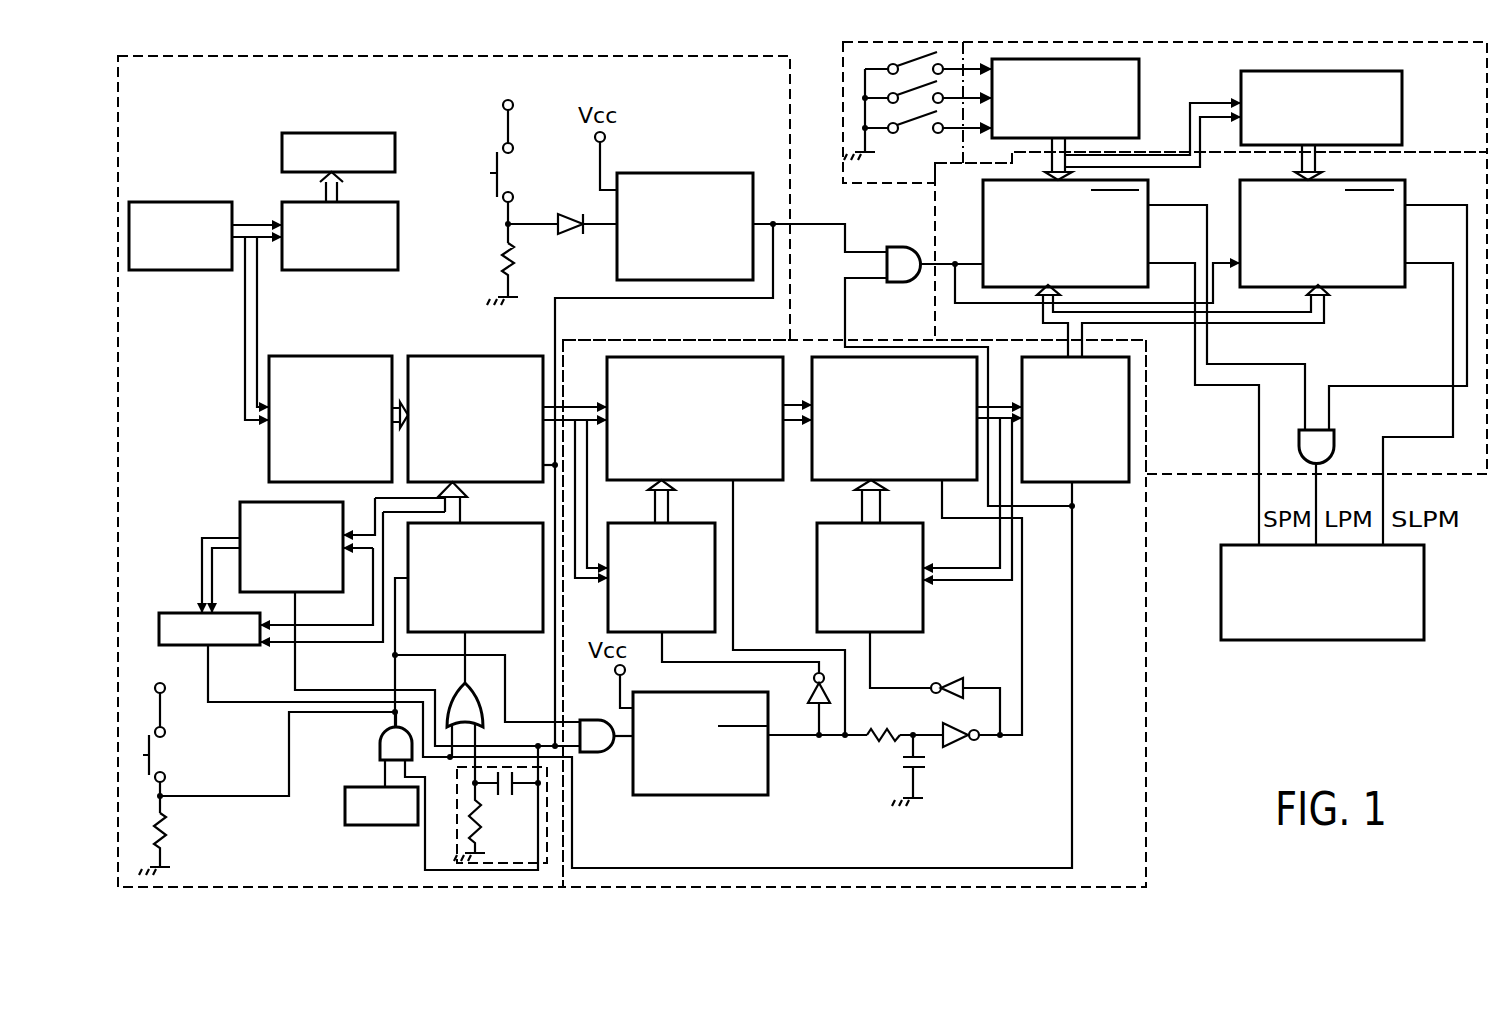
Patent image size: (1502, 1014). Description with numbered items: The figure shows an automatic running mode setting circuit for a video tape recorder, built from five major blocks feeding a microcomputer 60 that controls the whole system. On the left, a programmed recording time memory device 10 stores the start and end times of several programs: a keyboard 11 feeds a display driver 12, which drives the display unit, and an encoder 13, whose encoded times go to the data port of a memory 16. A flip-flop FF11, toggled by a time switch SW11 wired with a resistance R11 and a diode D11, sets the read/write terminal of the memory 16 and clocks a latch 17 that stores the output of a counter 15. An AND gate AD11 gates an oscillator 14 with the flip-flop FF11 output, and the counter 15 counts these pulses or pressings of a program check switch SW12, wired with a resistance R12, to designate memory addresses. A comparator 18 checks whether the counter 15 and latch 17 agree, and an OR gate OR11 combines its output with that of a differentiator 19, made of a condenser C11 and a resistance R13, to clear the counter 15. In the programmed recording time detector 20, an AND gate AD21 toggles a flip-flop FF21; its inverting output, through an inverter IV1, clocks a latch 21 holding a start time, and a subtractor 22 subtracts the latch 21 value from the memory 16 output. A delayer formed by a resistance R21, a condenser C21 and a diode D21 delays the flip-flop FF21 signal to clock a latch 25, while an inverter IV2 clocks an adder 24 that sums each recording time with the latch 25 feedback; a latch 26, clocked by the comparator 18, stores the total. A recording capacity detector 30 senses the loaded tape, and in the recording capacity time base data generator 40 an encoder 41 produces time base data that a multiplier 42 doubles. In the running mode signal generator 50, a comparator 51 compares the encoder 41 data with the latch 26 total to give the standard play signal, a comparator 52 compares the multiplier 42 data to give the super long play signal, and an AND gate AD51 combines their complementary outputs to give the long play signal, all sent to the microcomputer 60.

The programmed recording time memory device 10 is at (403, 33).
The keyboard 11 is at (172, 202).
The display driver 12 is at (282, 202).
The encoder 13 is at (269, 452).
The oscillator 14 is at (345, 810).
The counter 15 is at (527, 632).
The memory 16 is at (443, 356).
The latch 17 is at (240, 512).
The comparator 18 is at (182, 613).
The differentiator 19 is at (465, 817).
The programmed recording time detector 20 is at (1146, 713).
The latch 21 is at (608, 523).
The subtractor 22 is at (727, 357).
The adder 24 is at (810, 480).
The latch 25 is at (817, 572).
The latch 26 is at (1105, 482).
The recording capacity detector 30 is at (832, 216).
The recording capacity time base data generator 40 is at (823, 180).
The encoder 41 is at (1139, 100).
The multiplier 42 is at (1402, 103).
The running mode signal generator 50 is at (1203, 474).
The comparator 51 is at (983, 227).
The comparator 52 is at (1383, 287).
The microcomputer 60 is at (1424, 572).
The time switch SW11 is at (536, 155).
The resistance R11 is at (482, 274).
The diode D11 is at (561, 243).
The flip-flop FF11 is at (685, 226).
The program check switch SW12 is at (268, 733).
The resistance R12 is at (182, 844).
The condenser C11 is at (506, 797).
The resistance R13 is at (491, 822).
The OR gate OR11 is at (457, 690).
The AND gate AD11 is at (380, 753).
The AND gate AD21 is at (600, 752).
The flip-flop FF21 is at (700, 744).
The inverter IV1 is at (796, 700).
The inverter IV2 is at (958, 671).
The resistance R21 is at (874, 750).
The diode D21 is at (942, 723).
The condenser C21 is at (932, 769).
The AND gate AD51 is at (1334, 442).